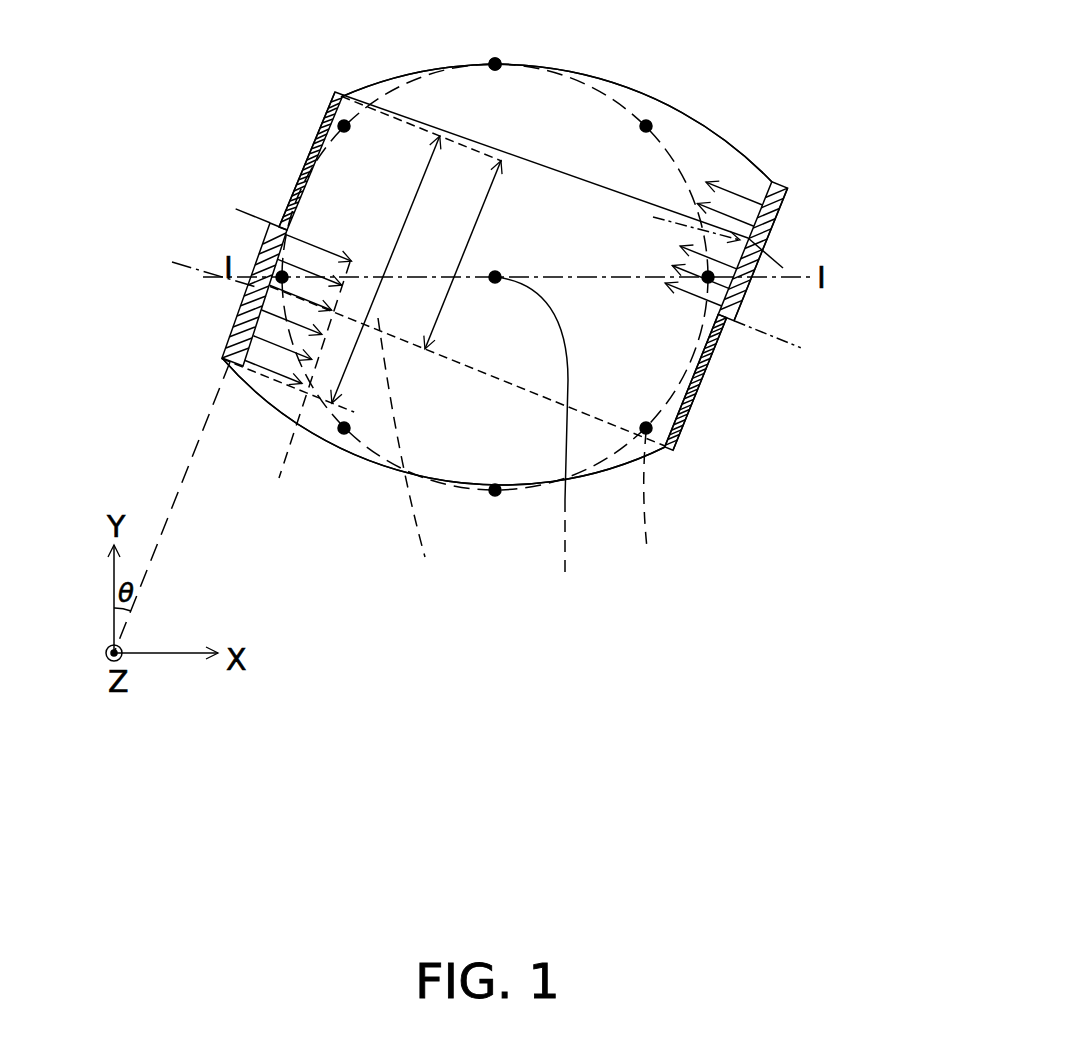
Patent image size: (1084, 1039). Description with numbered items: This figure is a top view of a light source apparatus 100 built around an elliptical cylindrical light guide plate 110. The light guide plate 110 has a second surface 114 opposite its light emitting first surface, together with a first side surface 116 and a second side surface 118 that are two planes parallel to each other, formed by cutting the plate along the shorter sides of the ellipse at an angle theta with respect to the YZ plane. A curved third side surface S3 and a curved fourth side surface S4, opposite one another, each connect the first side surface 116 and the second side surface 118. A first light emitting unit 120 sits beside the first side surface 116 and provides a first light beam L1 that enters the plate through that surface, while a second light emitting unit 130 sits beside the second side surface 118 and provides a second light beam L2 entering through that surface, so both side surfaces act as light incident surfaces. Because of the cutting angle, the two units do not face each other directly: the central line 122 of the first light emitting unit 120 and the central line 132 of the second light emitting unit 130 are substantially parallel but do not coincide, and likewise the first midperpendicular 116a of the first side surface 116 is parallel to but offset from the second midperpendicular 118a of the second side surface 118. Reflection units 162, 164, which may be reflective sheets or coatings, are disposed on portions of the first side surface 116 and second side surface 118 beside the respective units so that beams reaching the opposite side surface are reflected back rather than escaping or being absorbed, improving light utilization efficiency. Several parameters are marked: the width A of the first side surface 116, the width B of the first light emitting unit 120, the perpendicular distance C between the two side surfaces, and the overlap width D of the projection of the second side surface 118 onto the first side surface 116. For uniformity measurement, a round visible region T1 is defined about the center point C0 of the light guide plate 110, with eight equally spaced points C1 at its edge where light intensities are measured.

The light source apparatus 100 is at (838, 701).
The light guide plate 110 is at (274, 400).
The second surface 114 is at (706, 150).
The first side surface 116 is at (324, 111).
The first midperpendicular 116a is at (258, 208).
The second side surface 118 is at (675, 450).
The second midperpendicular 118a is at (797, 352).
The first light emitting unit 120 is at (222, 356).
The central line 122 is at (198, 262).
The second light emitting unit 130 is at (787, 188).
The central line 132 is at (770, 267).
The reflection unit 162 is at (301, 173).
The reflection unit 164 is at (697, 388).
The third side surface S3 is at (673, 100).
The fourth side surface S4 is at (351, 464).
The points C1 is at (497, 60).
The perpendicular distance C is at (545, 166).
The width of the overlap D is at (416, 282).
The first light beam L1 is at (232, 383).
The second light beam L2 is at (696, 385).
The width of the first side surface A is at (403, 452).
The width of the first light emitting unit B is at (307, 386).
The center point C0 is at (537, 439).
The visible region T1 is at (644, 505).